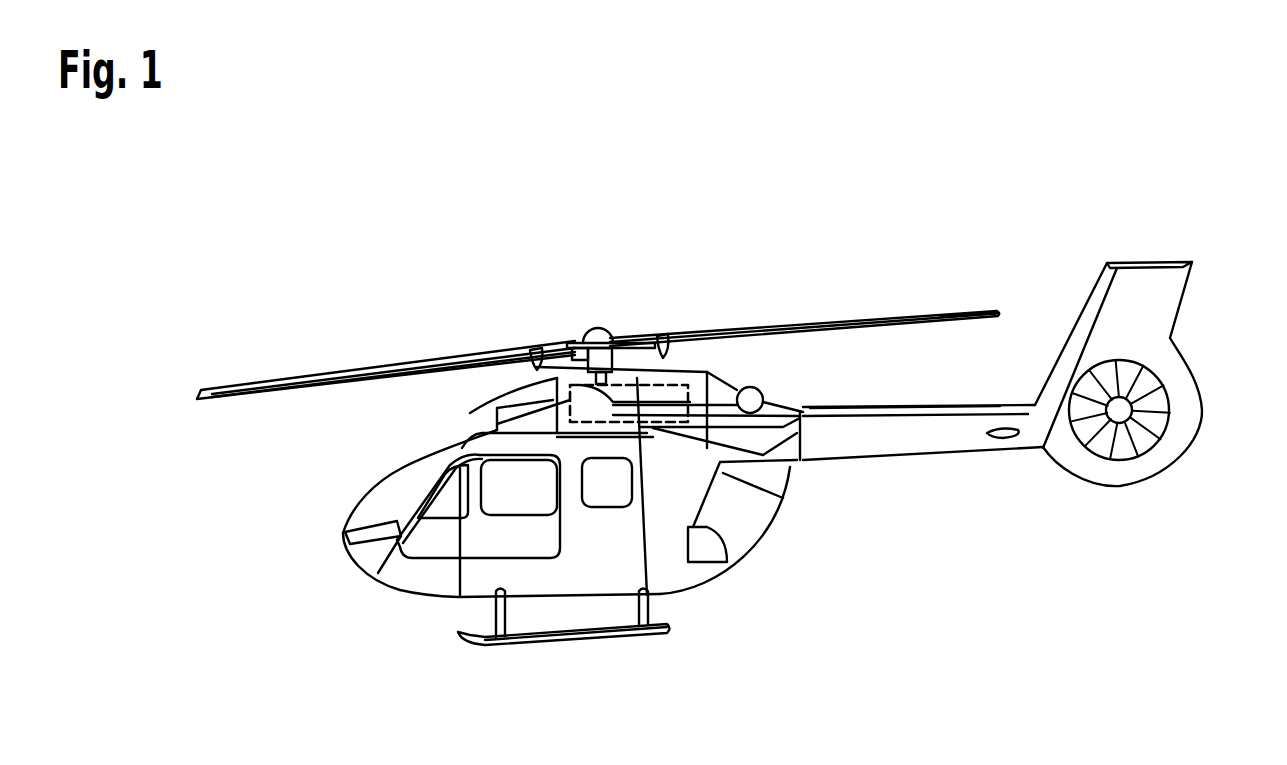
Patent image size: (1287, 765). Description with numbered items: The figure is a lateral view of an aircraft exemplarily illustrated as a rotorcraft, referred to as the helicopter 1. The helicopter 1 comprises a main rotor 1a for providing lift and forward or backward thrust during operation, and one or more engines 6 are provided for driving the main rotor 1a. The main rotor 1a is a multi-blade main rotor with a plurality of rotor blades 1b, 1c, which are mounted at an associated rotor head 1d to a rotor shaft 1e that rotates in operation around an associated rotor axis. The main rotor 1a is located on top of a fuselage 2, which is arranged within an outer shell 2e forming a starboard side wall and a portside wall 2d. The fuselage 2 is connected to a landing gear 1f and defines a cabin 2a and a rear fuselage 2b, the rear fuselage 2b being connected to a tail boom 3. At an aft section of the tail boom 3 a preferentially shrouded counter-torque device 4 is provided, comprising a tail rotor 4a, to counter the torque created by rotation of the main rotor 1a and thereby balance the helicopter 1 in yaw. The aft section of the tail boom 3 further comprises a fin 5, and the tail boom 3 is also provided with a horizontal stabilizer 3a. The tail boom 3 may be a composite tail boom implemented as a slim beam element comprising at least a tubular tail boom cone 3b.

The helicopter 1 is at (348, 237).
The main rotor 1a is at (984, 303).
The rotor blade 1b is at (259, 390).
The rotor blade 1c is at (954, 318).
The rotor head 1d is at (620, 332).
The rotor shaft 1e is at (537, 367).
The landing gear 1f is at (608, 634).
The fuselage 2 is at (700, 568).
The cabin 2a is at (427, 488).
The rear fuselage 2b is at (790, 492).
The portside wall 2d is at (607, 547).
The outer shell 2e is at (667, 518).
The tail boom 3 is at (948, 437).
The horizontal stabilizer 3a is at (1003, 440).
The tubular tail boom cone 3b is at (867, 403).
The counter-torque device 4 is at (1170, 395).
The tail rotor 4a is at (1117, 438).
The fin 5 is at (1142, 302).
The engine 6 is at (675, 381).